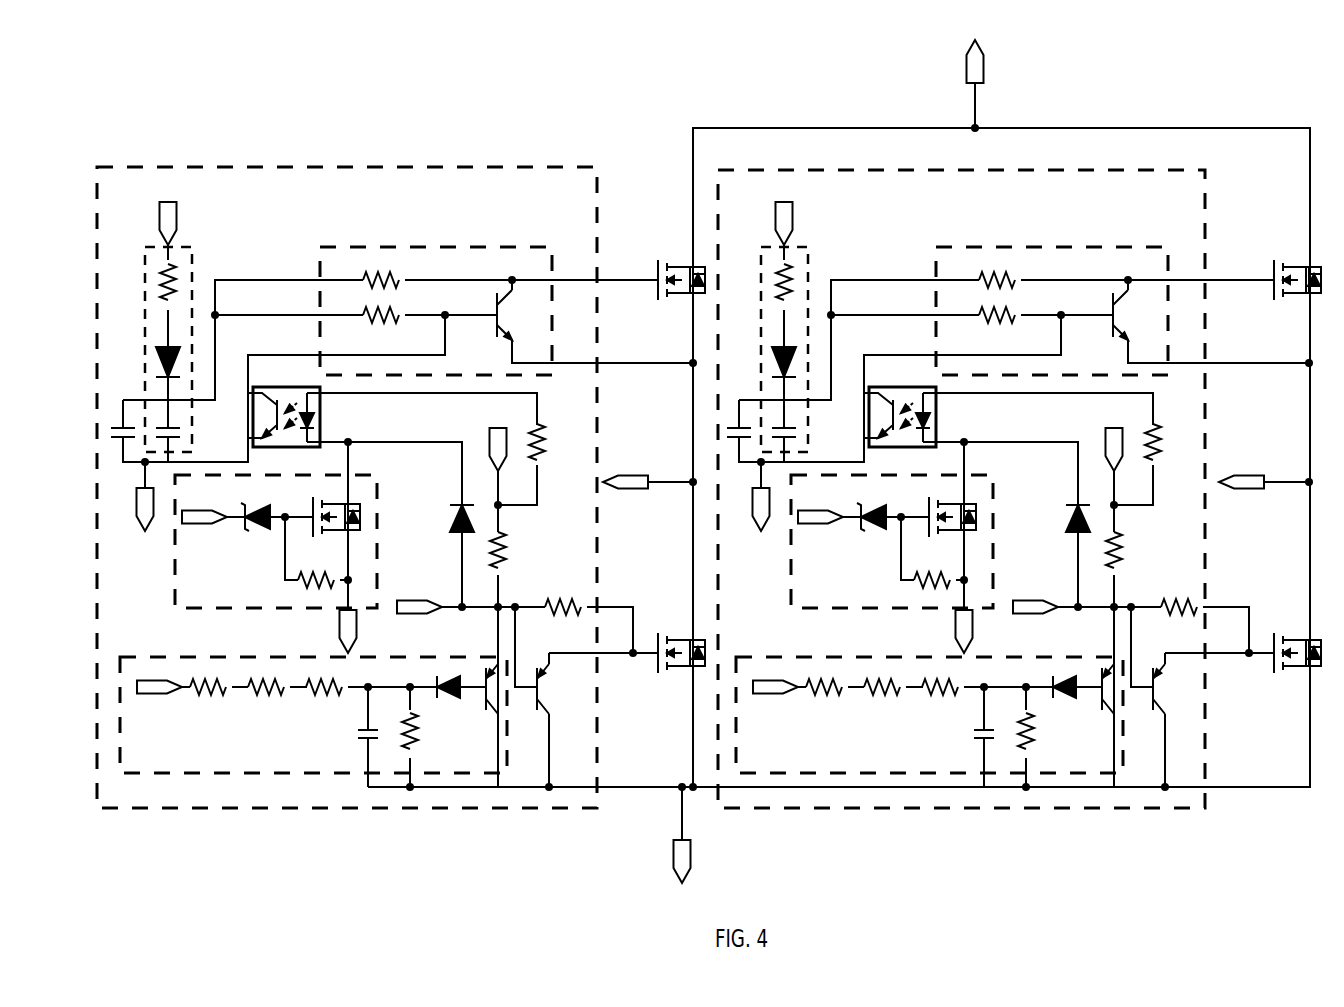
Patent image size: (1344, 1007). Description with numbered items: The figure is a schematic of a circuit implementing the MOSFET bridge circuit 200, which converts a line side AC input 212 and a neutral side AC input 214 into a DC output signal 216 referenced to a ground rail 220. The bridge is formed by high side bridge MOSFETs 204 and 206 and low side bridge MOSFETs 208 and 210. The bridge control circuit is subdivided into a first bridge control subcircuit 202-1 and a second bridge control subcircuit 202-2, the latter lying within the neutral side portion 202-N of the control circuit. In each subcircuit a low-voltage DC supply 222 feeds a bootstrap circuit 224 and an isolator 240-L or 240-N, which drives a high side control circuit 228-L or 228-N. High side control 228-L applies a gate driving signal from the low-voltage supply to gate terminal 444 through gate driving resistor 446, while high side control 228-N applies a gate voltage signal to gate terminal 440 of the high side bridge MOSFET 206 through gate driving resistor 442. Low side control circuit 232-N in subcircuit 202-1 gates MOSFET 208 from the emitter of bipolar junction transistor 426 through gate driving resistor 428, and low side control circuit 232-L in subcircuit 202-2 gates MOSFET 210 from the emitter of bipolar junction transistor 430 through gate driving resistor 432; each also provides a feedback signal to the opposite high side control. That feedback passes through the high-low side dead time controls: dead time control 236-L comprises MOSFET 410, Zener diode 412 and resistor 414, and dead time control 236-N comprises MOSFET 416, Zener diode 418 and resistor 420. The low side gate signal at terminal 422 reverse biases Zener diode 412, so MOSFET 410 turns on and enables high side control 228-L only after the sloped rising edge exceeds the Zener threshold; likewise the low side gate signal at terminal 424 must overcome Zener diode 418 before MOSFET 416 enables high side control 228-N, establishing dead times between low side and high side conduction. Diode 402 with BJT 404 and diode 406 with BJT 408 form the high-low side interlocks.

The bridge circuit 200 is at (148, 108).
The first bridge control subcircuit 202-1 is at (336, 167).
The second bridge control subcircuit 202-2 is at (985, 165).
The neutral side portion of bridge control circuit 202-N is at (843, 128).
The high side bridge MOSFET 204 is at (682, 306).
The high side bridge MOSFET 206 is at (1281, 308).
The low side bridge MOSFET 208 is at (680, 684).
The low side bridge MOSFET 210 is at (1277, 661).
The line side AC input 212 is at (140, 506).
The neutral side AC input 214 is at (180, 689).
The DC output signal 216 is at (980, 100).
The ground rail 220 is at (645, 792).
The low-voltage DC supply 222 is at (178, 214).
The bootstrap circuit 224 is at (193, 252).
The high side control circuit 228-L is at (508, 289).
The high side control circuit 228-N is at (1124, 289).
The low side control circuit 232-N is at (311, 693).
The low side control circuit 232-L is at (927, 693).
The high-low side dead time control circuit 236-L is at (276, 558).
The high-low side dead time control circuit 236-N is at (892, 558).
The isolator 240-L is at (252, 405).
The isolator 240-N is at (874, 417).
The diode 402 is at (450, 515).
The BJT 404 is at (537, 699).
The diode 406 is at (1057, 493).
The BJT 408 is at (1147, 720).
The MOSFET 410 is at (312, 508).
The Zener diode 412 is at (258, 530).
The resistor 414 is at (300, 589).
The MOSFET 416 is at (934, 505).
The Zener diode 418 is at (853, 548).
The resistor 420 is at (904, 589).
The terminal 422 is at (195, 512).
The terminal 424 is at (412, 598).
The bipolar junction transistor 426 is at (483, 698).
The gate driving resistor 428 is at (567, 593).
The bipolar junction transistor 430 is at (1089, 725).
The gate driving resistor 432 is at (1180, 571).
The gate terminal 440 is at (1273, 278).
The gate driving resistor 442 is at (1030, 270).
The gate terminal 444 is at (657, 278).
The gate driving resistor 446 is at (404, 273).